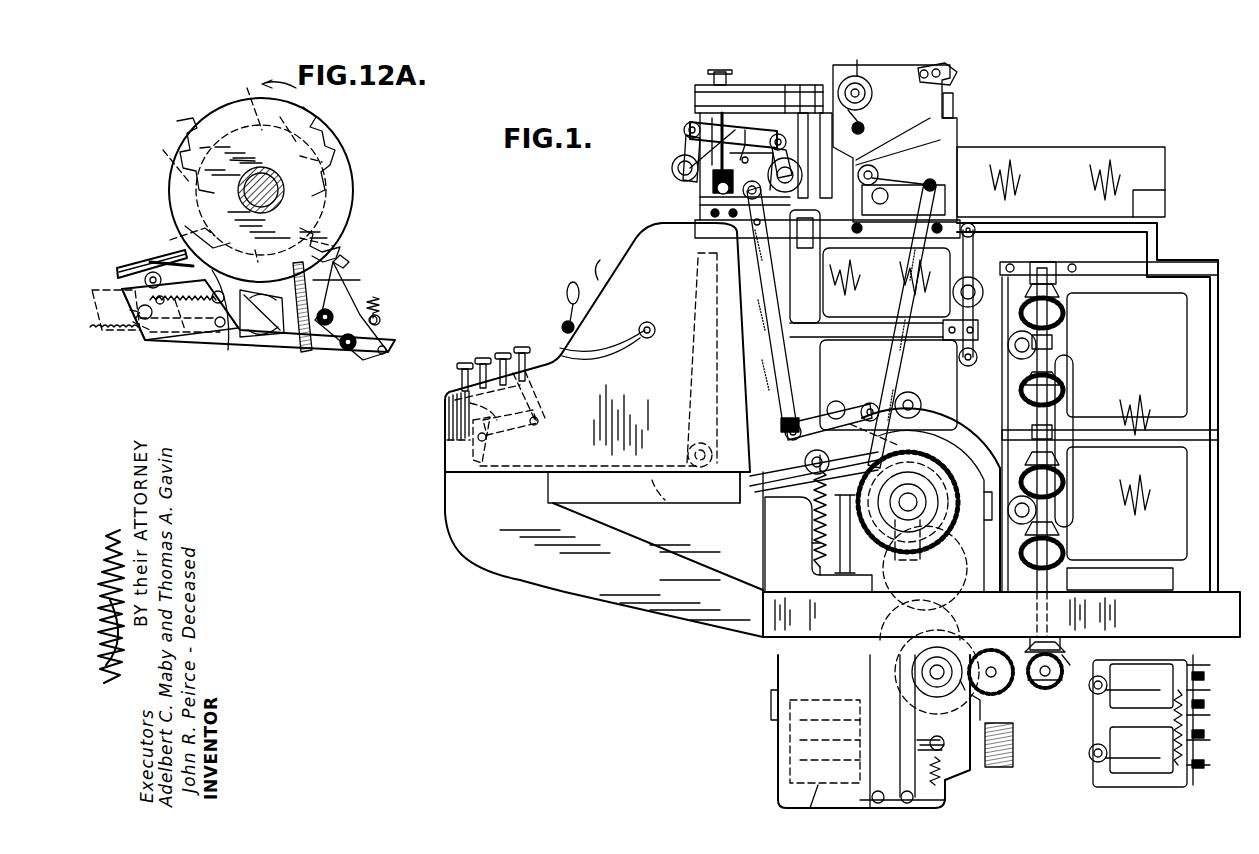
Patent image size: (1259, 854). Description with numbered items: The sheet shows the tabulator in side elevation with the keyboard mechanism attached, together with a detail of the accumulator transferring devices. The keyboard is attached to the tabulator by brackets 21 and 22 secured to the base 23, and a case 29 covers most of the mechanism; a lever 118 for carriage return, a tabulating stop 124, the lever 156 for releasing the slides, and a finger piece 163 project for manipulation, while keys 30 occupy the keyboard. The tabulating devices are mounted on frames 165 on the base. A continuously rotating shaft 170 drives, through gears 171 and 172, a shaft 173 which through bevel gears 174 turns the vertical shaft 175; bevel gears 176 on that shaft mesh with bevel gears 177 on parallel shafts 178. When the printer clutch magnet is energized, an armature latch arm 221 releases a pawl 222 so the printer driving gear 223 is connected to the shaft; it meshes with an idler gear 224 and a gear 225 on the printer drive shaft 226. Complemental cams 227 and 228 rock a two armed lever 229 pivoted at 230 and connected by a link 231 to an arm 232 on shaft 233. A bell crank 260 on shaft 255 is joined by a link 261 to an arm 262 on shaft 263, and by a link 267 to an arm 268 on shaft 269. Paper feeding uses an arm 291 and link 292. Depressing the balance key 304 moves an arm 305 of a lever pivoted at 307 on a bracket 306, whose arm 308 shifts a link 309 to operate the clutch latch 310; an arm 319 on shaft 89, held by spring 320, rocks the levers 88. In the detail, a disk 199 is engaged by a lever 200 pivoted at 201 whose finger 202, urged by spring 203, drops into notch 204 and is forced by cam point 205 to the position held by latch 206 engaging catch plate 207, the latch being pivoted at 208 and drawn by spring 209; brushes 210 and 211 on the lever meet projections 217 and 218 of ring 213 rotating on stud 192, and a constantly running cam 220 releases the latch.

In FIG. 12A, the disk 199 is at (353, 166).
In FIG. 12A, the metallic ring 213 is at (313, 110).
In FIG. 12A, the stud 192 is at (249, 175).
In FIG. 12A, the contact projections 218 is at (249, 90).
In FIG. 12A, the contact projections 217 is at (177, 130).
In FIG. 12A, the constantly running cam 220 is at (233, 183).
In FIG. 12A, the brush 210 is at (193, 257).
In FIG. 12A, the latch pivot 208 is at (157, 262).
In FIG. 12A, the notch 204 is at (343, 243).
In FIG. 12A, the cam point 205 is at (347, 250).
In FIG. 12A, the finger 202 is at (347, 263).
In FIG. 12A, the brush 211 is at (360, 280).
In FIG. 12A, the spring 203 is at (380, 297).
In FIG. 12A, the lever 200 is at (283, 332).
In FIG. 12A, the latch 206 is at (205, 320).
In FIG. 12A, the lever pivot 201 is at (265, 330).
In FIG. 12A, the catch plate 207 is at (163, 333).
In FIG. 12A, the spring 209 is at (137, 290).
In FIG. 1, the case 29 is at (632, 248).
In FIG. 1, the levers 88 is at (690, 400).
In FIG. 1, the shaft 89 is at (688, 452).
In FIG. 1, the finger piece 163 is at (600, 260).
In FIG. 1, the lever 118 is at (567, 290).
In FIG. 1, the tabulating stop 124 is at (561, 328).
In FIG. 1, the lever 156 is at (617, 347).
In FIG. 1, the keys 30 is at (460, 370).
In FIG. 1, the balance key 304 is at (498, 356).
In FIG. 1, the arm 305 is at (470, 403).
In FIG. 1, the bracket 306 is at (470, 417).
In FIG. 1, the lever pivot 307 is at (480, 437).
In FIG. 1, the arm 308 is at (478, 452).
In FIG. 1, the bracket 21 is at (578, 580).
In FIG. 1, the bracket 22 is at (683, 540).
In FIG. 1, the link 309 is at (653, 485).
In FIG. 1, the arm 319 is at (770, 457).
In FIG. 1, the complemental cam 228 is at (847, 597).
In FIG. 1, the link 231 is at (900, 433).
In FIG. 1, the printer drive shaft 226 is at (913, 497).
In FIG. 1, the complemental cam 227 is at (988, 487).
In FIG. 1, the gear 225 is at (935, 527).
In FIG. 1, the idler gear 224 is at (950, 600).
In FIG. 1, the pawl 222 is at (905, 632).
In FIG. 1, the two armed lever 229 is at (818, 512).
In FIG. 1, the clutch latch 310 is at (840, 520).
In FIG. 1, the spring 320 is at (817, 543).
In FIG. 1, the lever pivot 230 is at (790, 457).
In FIG. 1, the arm 262 is at (833, 417).
In FIG. 1, the shaft 263 is at (870, 410).
In FIG. 1, the link 261 is at (762, 270).
In FIG. 1, the arm 232 is at (933, 300).
In FIG. 1, the link 292 is at (902, 290).
In FIG. 1, the shaft 233 is at (972, 287).
In FIG. 1, the bell crank 260 is at (776, 233).
In FIG. 1, the shaft 255 is at (765, 205).
In FIG. 1, the link 267 is at (700, 120).
In FIG. 1, the arm 268 is at (688, 150).
In FIG. 1, the shaft 269 is at (672, 180).
In FIG. 1, the arm 291 is at (916, 180).
In FIG. 1, the frames 165 is at (1193, 310).
In FIG. 1, the bevel gears 177 is at (1068, 470).
In FIG. 1, the bevel gears 176 is at (1060, 290).
In FIG. 1, the parallel shafts 178 is at (1064, 315).
In FIG. 1, the vertical shaft 175 is at (1050, 345).
In FIG. 1, the base 23 is at (1220, 633).
In FIG. 1, the armature latch arm 221 is at (852, 797).
In FIG. 1, the shaft 170 is at (935, 680).
In FIG. 1, the printer driving gear 223 is at (968, 690).
In FIG. 1, the gear 171 is at (1005, 685).
In FIG. 1, the gear 172 is at (1035, 705).
In FIG. 1, the shaft 173 is at (1045, 700).
In FIG. 1, the bevel gears 174 is at (1075, 683).